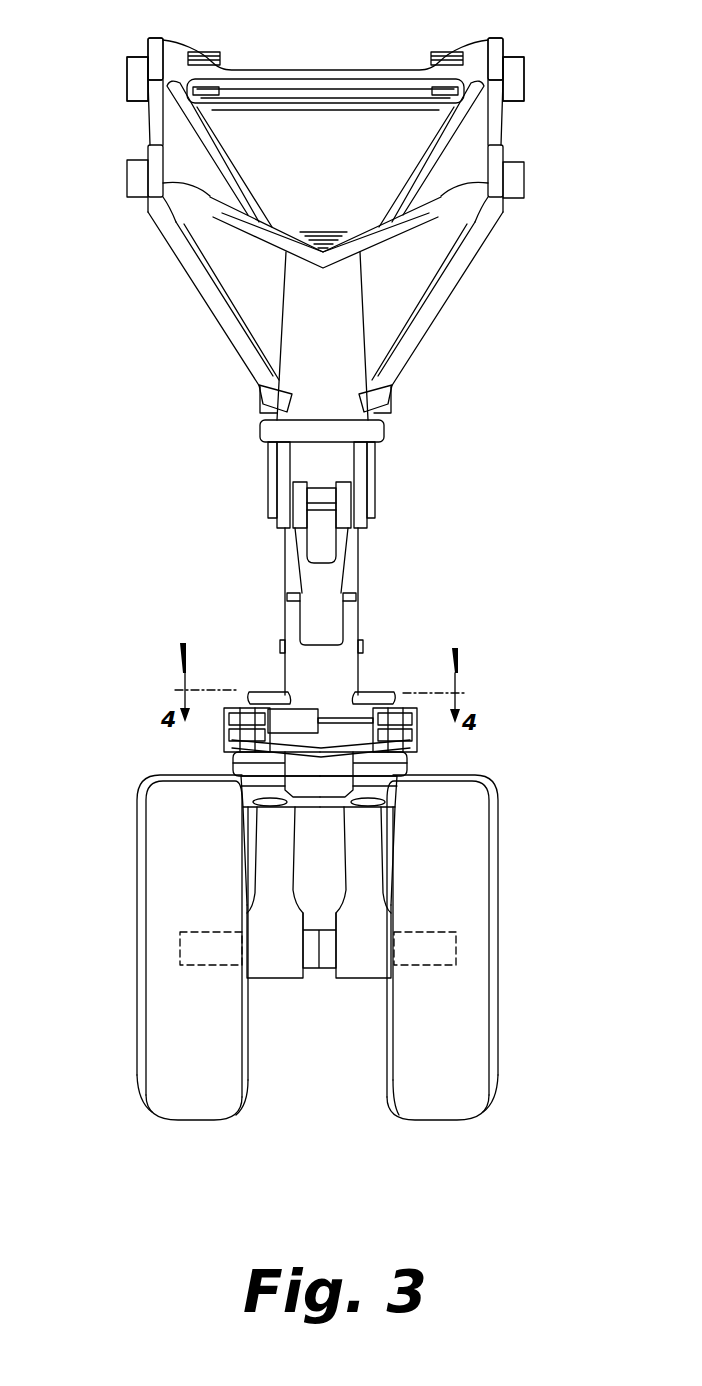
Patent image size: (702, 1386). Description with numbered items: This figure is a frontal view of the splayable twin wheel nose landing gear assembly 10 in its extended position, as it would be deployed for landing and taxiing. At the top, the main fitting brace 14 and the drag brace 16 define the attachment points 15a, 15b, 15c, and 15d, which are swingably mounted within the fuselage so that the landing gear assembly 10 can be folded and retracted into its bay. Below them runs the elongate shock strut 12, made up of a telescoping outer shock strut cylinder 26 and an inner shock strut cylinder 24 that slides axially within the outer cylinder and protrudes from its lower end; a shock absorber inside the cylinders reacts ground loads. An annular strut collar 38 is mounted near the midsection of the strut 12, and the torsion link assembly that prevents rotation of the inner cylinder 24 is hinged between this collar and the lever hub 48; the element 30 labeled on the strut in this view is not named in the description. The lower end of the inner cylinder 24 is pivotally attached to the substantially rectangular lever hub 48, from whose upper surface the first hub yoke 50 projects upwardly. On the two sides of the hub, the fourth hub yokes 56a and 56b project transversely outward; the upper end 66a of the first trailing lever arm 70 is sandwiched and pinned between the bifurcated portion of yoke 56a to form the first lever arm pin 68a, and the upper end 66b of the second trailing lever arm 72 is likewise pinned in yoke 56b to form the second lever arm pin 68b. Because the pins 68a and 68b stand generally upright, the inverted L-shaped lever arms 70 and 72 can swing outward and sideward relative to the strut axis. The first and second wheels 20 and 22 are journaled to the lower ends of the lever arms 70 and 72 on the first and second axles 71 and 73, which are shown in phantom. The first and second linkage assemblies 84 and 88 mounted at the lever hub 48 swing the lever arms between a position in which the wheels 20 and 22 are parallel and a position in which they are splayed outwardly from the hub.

The splayable twin wheel nose landing gear assembly 10 is at (518, 462).
The shock strut 12 is at (316, 557).
The main fitting brace 14 is at (296, 301).
The attachment point 15a is at (127, 172).
The attachment point 15b is at (524, 172).
The attachment point 15c is at (524, 64).
The attachment point 15d is at (127, 64).
The drag brace 16 is at (328, 71).
The first wheel 20 is at (142, 1077).
The second wheel 22 is at (496, 1064).
The inner shock strut cylinder 24 is at (350, 577).
The outer shock strut cylinder 26 is at (347, 297).
The strut cylinder 30 is at (308, 580).
The annular strut collar 38 is at (268, 476).
The lever hub 48 is at (357, 675).
The first hub yoke 50 is at (300, 672).
The fourth hub yoke 56a is at (265, 800).
The fourth hub yoke 56b is at (375, 802).
The upper end of first lever arm 66a is at (250, 788).
The upper end of second lever arm 66b is at (392, 790).
The first lever arm pin 68a is at (260, 808).
The second lever arm pin 68b is at (385, 810).
The first trailing lever arm 70 is at (277, 982).
The first axle 71 is at (212, 964).
The second trailing lever arm 72 is at (358, 982).
The second axle 73 is at (423, 964).
The first linkage assembly 84 is at (222, 733).
The second linkage assembly 88 is at (422, 737).